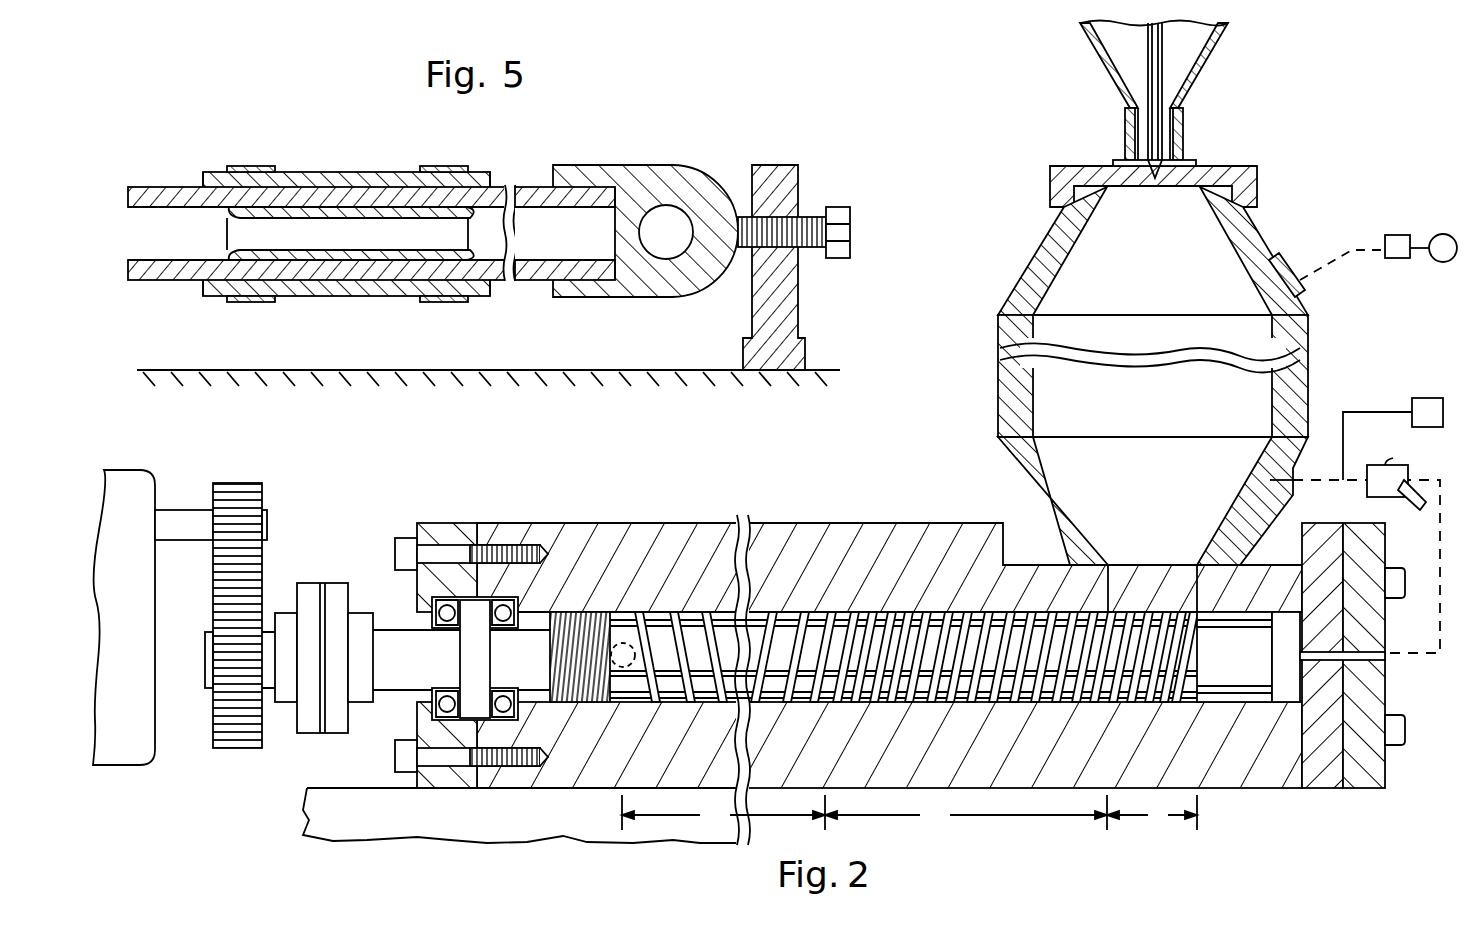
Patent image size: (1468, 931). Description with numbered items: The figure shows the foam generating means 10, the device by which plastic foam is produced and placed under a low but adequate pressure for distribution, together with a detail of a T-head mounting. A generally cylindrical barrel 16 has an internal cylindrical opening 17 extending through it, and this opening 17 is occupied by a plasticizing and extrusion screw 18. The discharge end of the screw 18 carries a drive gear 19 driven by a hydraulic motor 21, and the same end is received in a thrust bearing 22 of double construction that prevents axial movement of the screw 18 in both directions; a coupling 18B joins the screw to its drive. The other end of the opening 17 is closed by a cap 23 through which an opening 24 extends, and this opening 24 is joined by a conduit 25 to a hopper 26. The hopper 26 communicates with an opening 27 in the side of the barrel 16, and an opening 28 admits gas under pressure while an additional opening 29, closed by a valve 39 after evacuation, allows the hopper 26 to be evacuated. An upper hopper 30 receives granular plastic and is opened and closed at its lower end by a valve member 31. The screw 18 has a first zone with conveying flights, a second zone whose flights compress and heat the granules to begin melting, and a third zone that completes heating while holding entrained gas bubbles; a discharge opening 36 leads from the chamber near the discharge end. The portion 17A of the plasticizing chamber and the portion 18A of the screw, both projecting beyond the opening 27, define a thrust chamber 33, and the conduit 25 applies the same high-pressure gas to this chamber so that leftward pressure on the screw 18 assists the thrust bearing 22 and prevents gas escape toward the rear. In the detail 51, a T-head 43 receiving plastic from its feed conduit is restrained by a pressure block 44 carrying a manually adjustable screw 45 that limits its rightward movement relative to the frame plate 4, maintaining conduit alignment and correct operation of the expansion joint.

In FIG. 2, the frame plate 4 is at (310, 818).
In FIG. 2, the foam generating means 10 is at (940, 496).
In FIG. 2, the barrel 16 is at (808, 775).
In FIG. 2, the internal cylindrical opening 17 is at (695, 702).
In FIG. 2, the portion of the plasticizing chamber 17A is at (1292, 612).
In FIG. 2, the plasticizing and extrusion screw 18 is at (948, 612).
In FIG. 2, the portion of the plasticizing screw 18A is at (1237, 672).
In FIG. 2, the drive shaft coupling 18B is at (402, 672).
In FIG. 2, the drive gear 19 is at (232, 746).
In FIG. 2, the hydraulic motor 21 is at (125, 752).
In FIG. 2, the thrust bearing 22 is at (432, 612).
In FIG. 2, the cap 23 is at (1372, 548).
In FIG. 2, the opening 24 is at (1365, 655).
In FIG. 2, the conduit 25 is at (1440, 512).
In FIG. 2, the hopper 26 is at (1276, 243).
In FIG. 2, the opening 27 is at (1192, 578).
In FIG. 2, the opening 28 is at (1296, 482).
In FIG. 2, the opening 29 is at (1298, 279).
In FIG. 2, the upper hopper 30 is at (1207, 64).
In FIG. 2, the valve member 31 is at (1160, 172).
In FIG. 2, the thrust chamber 33 is at (1288, 668).
In FIG. 2, the discharge opening 36 is at (620, 643).
In FIG. 2, the valve 39 is at (1397, 240).
In FIG. 5, the T-head 43 is at (690, 168).
In FIG. 5, the pressure block 44 is at (795, 166).
In FIG. 5, the manually adjustable screw 45 is at (830, 212).
In FIG. 5, the coupling joint assembly 51 is at (318, 142).